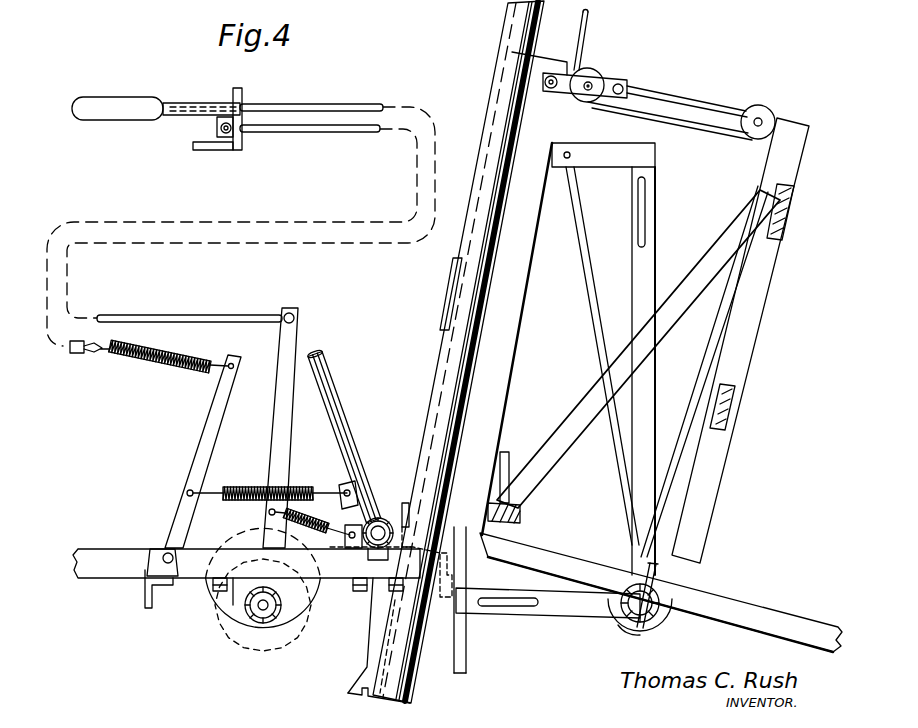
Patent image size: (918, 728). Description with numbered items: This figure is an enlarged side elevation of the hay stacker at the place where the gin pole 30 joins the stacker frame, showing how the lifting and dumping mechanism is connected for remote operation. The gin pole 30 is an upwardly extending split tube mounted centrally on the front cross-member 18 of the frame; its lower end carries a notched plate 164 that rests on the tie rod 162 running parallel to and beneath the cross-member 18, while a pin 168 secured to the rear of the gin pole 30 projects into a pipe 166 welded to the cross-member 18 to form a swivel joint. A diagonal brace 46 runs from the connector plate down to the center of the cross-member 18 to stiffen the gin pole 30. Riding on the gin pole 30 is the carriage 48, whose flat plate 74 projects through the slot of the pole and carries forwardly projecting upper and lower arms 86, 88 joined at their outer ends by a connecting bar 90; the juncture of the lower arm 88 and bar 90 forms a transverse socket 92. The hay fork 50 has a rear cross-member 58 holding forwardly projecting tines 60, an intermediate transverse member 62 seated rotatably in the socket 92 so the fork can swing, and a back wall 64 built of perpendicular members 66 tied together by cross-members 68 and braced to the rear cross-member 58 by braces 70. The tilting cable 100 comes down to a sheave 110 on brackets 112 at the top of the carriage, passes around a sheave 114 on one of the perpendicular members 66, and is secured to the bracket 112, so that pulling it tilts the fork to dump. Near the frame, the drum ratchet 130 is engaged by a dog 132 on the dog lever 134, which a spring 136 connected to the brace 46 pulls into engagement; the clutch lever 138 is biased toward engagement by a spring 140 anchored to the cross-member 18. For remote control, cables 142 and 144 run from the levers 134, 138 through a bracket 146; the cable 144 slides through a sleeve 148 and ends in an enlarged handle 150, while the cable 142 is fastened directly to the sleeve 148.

The front cross-member 18 is at (377, 518).
The gin pole 30 is at (440, 367).
The diagonal brace 46 is at (342, 413).
The carriage 48 is at (631, 343).
The hay fork 50 is at (661, 591).
The rear cross-member 58 is at (523, 513).
The tines 60 is at (757, 607).
The intermediate transverse member 62 is at (660, 610).
The back wall 64 is at (745, 357).
The perpendicular members 66 is at (690, 483).
The cross-members 68 is at (790, 228).
The braces 70 is at (563, 423).
The flat plate 74 is at (518, 325).
The upper arm 86 is at (593, 148).
The lower arm 88 is at (553, 593).
The connecting bar 90 is at (643, 395).
The transverse socket 92 is at (618, 625).
The tilting cable 100 is at (693, 95).
The sheave 110 is at (593, 67).
The brackets 112 is at (607, 82).
The sheave 114 is at (763, 108).
The ratchet 130 is at (260, 640).
The dog 132 is at (205, 548).
The dog lever 134 is at (178, 522).
The spring 136 is at (234, 479).
The clutch lever 138 is at (290, 340).
The spring 140 is at (315, 530).
The cable 142 is at (78, 345).
The cable 144 is at (323, 103).
The bracket 146 is at (243, 97).
The sleeve 148 is at (184, 105).
The handle 150 is at (103, 98).
The tie rod 162 is at (368, 638).
The notched plate 164 is at (347, 689).
The pipe 166 is at (408, 531).
The pin 168 is at (405, 500).